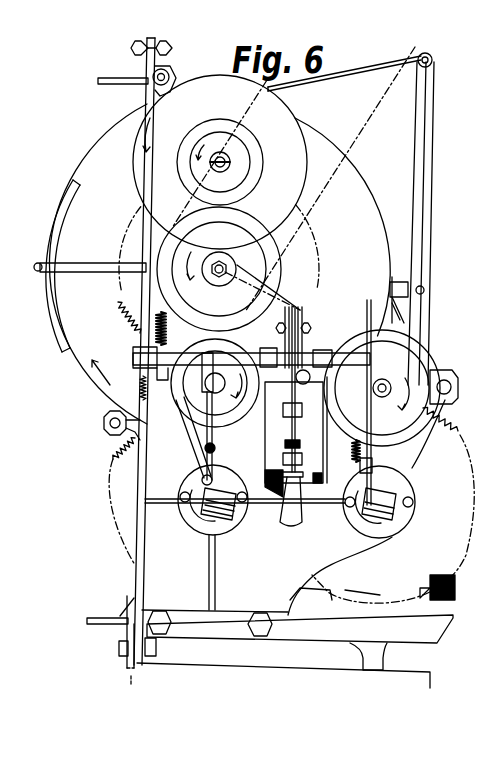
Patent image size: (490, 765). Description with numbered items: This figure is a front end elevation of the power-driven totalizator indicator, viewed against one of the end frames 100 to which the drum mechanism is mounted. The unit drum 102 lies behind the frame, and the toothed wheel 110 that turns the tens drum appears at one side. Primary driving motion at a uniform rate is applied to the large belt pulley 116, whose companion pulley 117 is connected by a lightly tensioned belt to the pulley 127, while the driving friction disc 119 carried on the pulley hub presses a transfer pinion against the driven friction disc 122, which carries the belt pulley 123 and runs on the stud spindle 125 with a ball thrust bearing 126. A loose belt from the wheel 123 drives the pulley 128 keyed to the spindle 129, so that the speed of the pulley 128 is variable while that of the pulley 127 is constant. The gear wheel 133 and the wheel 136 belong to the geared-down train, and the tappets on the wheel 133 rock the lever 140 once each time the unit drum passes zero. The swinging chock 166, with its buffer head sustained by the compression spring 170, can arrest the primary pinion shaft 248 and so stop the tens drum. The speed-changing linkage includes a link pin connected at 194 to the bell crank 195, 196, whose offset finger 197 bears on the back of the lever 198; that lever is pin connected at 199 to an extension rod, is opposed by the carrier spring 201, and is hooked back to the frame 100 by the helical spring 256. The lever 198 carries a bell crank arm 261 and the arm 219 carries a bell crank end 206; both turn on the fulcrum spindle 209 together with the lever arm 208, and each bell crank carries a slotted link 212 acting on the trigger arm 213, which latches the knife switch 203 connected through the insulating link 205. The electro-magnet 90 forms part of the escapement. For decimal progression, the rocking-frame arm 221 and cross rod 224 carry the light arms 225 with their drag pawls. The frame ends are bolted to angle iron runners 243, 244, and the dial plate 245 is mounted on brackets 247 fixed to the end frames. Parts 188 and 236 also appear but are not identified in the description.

The electro-magnet 90 is at (437, 590).
The end frames 100 is at (239, 570).
The unit drum 102 is at (129, 124).
The toothed wheel 110 is at (118, 302).
The belt pulley 116 is at (275, 245).
The pulley 117 is at (212, 254).
The friction disc 119 is at (278, 255).
The driven friction disc 122 is at (240, 131).
The belt pulley 123 is at (249, 133).
The stud spindle 125 is at (232, 165).
The ball thrust bearing 126 is at (230, 156).
The pulley 127 is at (382, 388).
The belt pulley 128 is at (192, 418).
The spindle 129 is at (222, 381).
The gear wheel 133 is at (113, 459).
The wheel 136 is at (393, 505).
The rocking lever 140 is at (312, 580).
The swinging chock 166 is at (360, 468).
The compression spring 170 is at (352, 444).
The link 188 is at (187, 450).
The pin connection 194 is at (160, 395).
The bell crank long arm 195 is at (146, 371).
The bell crank short arm 196 is at (190, 400).
The offset finger 197 is at (222, 420).
The lever 198 is at (186, 440).
The pin connection 199 is at (231, 517).
The carrier spring 201 is at (140, 337).
The knife switch 203 is at (295, 430).
The insulating link 205 is at (300, 400).
The bell crank end 206 is at (303, 348).
The lever arm 208 is at (315, 387).
The fulcrum pin 209 is at (232, 285).
The slotted links 212 is at (268, 330).
The trigger arm 213 is at (295, 333).
The arm 219 is at (372, 419).
The rocking frame arm 221 is at (428, 166).
The cross rod 224 is at (430, 65).
The light arms 225 is at (349, 75).
The bracket 236 is at (407, 277).
The angle iron runner 243 is at (125, 79).
The angle iron runner 244 is at (110, 628).
The dial plate 245 is at (67, 172).
The brackets 247 is at (82, 263).
The primary pinion shaft 248 is at (408, 393).
The helical spring 256 is at (216, 453).
The bell crank arm 261 is at (253, 275).